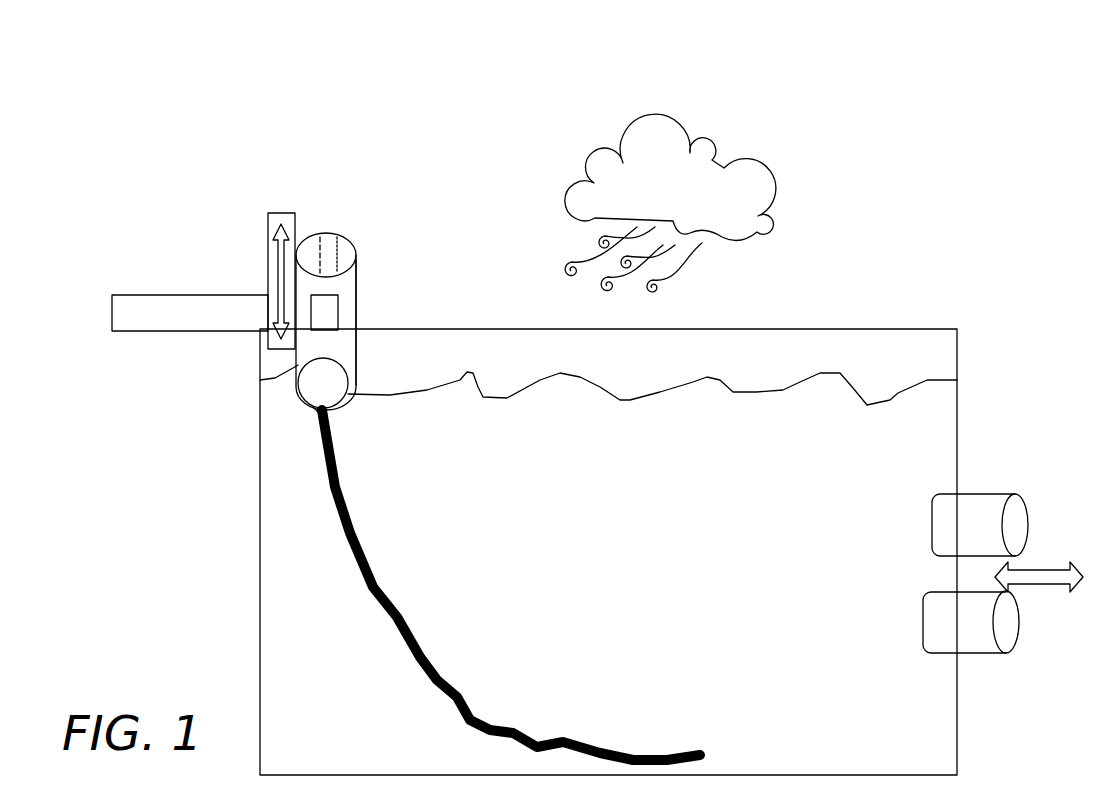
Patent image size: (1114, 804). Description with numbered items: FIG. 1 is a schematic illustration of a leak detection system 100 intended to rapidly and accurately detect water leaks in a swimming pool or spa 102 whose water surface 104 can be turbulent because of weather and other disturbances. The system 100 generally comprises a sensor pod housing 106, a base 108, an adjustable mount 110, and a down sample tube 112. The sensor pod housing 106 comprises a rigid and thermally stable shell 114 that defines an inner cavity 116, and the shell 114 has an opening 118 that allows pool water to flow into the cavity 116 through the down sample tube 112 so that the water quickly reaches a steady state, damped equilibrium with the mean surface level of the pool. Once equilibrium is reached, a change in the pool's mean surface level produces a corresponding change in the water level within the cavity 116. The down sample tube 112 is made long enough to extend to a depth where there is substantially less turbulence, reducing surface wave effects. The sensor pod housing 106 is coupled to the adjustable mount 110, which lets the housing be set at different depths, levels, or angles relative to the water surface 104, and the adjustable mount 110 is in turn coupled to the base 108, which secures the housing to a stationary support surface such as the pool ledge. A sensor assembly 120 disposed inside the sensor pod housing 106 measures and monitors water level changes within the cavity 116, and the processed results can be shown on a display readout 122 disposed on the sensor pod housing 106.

The leak detection system 100 is at (438, 101).
The swimming pool or spa 102 is at (893, 322).
The water surface 104 is at (239, 380).
The sensor pod housing 106 is at (357, 250).
The base 108 is at (157, 271).
The adjustable mount 110 is at (283, 209).
The down sample tube 112 is at (673, 717).
The shell 114 is at (361, 280).
The inner cavity 116 is at (347, 367).
The opening 118 is at (313, 407).
The sensor assembly 120 is at (327, 334).
The display readout 122 is at (342, 226).